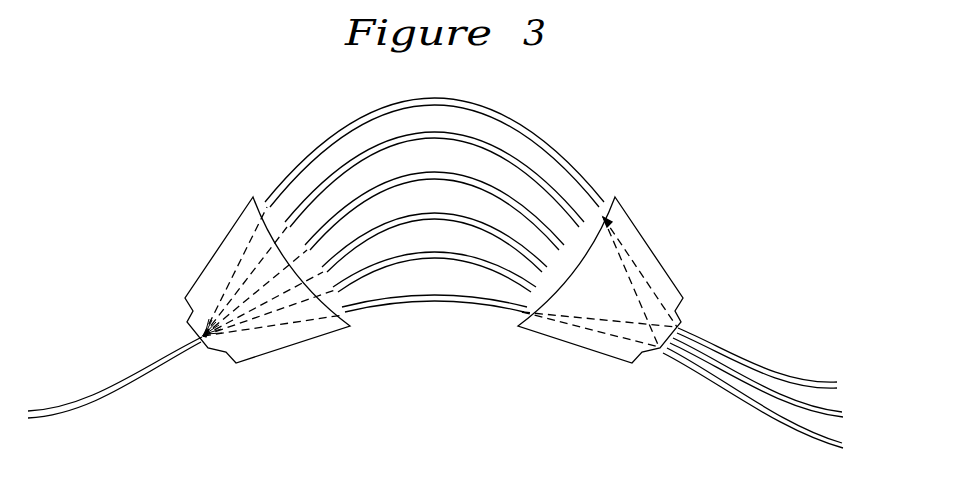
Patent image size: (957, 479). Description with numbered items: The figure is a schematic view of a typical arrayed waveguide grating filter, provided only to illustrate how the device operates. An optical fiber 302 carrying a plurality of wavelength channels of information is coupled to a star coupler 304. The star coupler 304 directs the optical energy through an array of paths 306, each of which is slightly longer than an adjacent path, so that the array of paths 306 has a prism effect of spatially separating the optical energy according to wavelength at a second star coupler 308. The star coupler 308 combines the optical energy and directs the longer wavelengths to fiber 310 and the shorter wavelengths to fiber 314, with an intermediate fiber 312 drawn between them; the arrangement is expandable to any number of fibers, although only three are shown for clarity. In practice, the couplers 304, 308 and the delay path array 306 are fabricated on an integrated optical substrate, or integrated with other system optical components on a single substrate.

The optical fiber 302 is at (115, 393).
The star coupler 304 is at (256, 280).
The array of paths 306 is at (325, 178).
The star coupler 308 is at (607, 280).
The fiber 310 is at (785, 362).
The second output optical fiber 312 is at (782, 381).
The fiber 314 is at (778, 402).